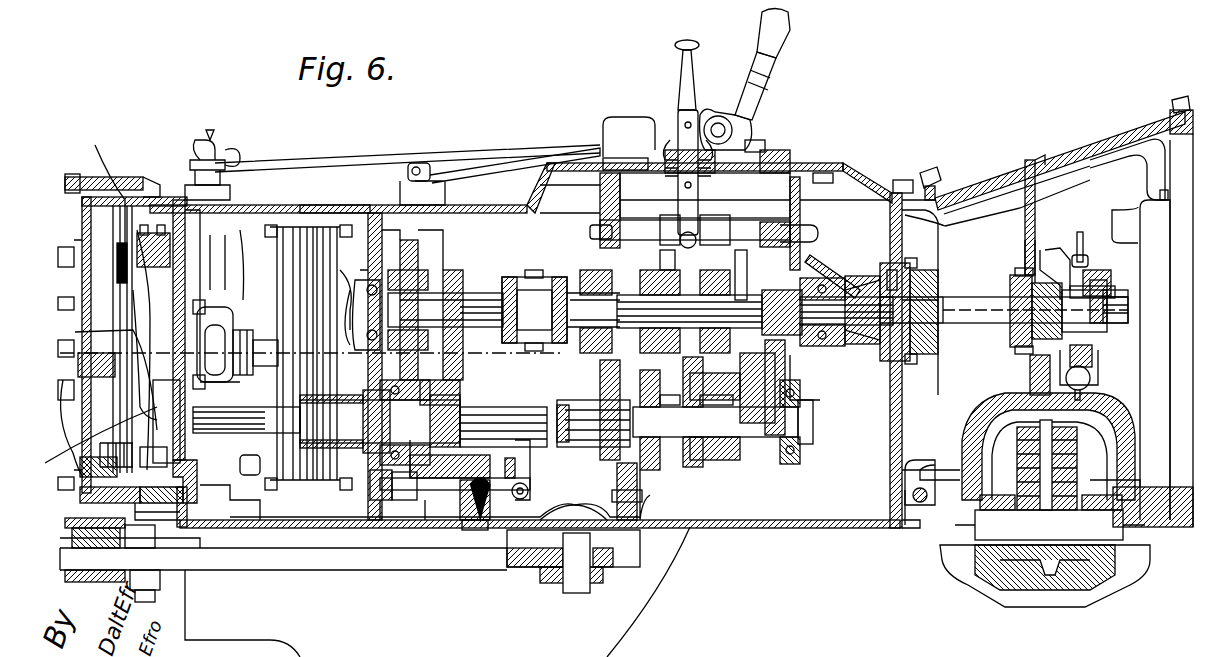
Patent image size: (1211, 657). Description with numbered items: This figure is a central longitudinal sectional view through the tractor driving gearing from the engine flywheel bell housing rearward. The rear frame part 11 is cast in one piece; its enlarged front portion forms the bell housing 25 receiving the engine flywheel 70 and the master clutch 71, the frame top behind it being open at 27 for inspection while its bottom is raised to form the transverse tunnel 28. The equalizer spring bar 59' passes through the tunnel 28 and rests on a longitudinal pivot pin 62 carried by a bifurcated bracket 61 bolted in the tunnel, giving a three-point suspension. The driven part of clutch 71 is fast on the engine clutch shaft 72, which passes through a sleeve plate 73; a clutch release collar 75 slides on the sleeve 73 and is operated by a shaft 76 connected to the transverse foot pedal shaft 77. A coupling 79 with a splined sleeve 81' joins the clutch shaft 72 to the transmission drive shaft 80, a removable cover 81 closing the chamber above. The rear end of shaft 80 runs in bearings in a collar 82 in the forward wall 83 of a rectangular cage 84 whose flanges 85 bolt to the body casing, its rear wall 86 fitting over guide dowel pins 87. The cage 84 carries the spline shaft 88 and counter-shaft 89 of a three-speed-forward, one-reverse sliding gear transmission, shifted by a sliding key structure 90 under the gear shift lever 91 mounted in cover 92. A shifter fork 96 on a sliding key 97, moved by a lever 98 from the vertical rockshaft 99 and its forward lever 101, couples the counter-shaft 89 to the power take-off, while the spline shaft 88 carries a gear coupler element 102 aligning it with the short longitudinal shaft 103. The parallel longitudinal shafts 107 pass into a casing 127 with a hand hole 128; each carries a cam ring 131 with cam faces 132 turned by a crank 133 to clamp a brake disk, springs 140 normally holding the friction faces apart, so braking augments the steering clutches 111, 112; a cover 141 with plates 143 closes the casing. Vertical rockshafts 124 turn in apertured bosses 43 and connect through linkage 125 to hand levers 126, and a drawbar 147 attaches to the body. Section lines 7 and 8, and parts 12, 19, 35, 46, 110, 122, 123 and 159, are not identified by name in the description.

The section line 7 is at (106, 362).
The section line 8 is at (397, 215).
The frame part 11 is at (810, 528).
The housing bottom wall 12 is at (445, 522).
The bell housing 19 is at (902, 404).
The bell housing 25 is at (1172, 118).
The inspection opening 27 is at (945, 206).
The transverse tunnel 28 is at (1000, 396).
The frame member 35 is at (658, 572).
The apertured bosses 43 is at (265, 415).
The gear 46 is at (365, 422).
The equalizer spring bar 59' is at (1012, 465).
The bracket 61 is at (995, 560).
The pivot pin 62 is at (985, 530).
The flywheel 70 is at (1185, 500).
The master clutch 71 is at (1152, 210).
The engine clutch shaft 72 is at (1105, 300).
The sleeve plate 73 is at (1057, 262).
The clutch release collar 75 is at (1090, 268).
The shaft 76 is at (1060, 368).
The foot pedal shaft 77 is at (898, 496).
The coupling 79 is at (975, 310).
The transmission drive shaft 80 is at (888, 338).
The removable cover 81 is at (997, 196).
The splined sleeve 81' is at (871, 294).
The collar 82 is at (822, 278).
The forward transverse wall 83 is at (818, 233).
The cage 84 is at (755, 185).
The flanges 85 is at (590, 172).
The rear wall 86 is at (590, 232).
The guide dowel pins 87 is at (640, 503).
The spline shaft 88 is at (694, 302).
The counter-shaft 89 is at (752, 425).
The sliding key structure 90 is at (738, 232).
The gear shift lever 91 is at (693, 72).
The cover 92 is at (635, 165).
The shifter fork 96 is at (530, 461).
The sliding key 97 is at (500, 485).
The lever 98 is at (370, 490).
The rockshaft 99 is at (435, 240).
The lever 101 is at (518, 160).
The gear coupler element 102 is at (516, 285).
The short longitudinal shaft 103 is at (487, 292).
The longitudinal shafts 107 is at (262, 345).
The clutch housing 110 is at (82, 211).
The steering clutch 111 is at (236, 382).
The steering clutch 112 is at (338, 212).
The bracket 122 is at (238, 327).
The link 123 is at (212, 300).
The rockshafts 124 is at (212, 265).
The linkage 125 is at (370, 160).
The hand lever 126 is at (778, 48).
The casing 127 is at (182, 205).
The hand hole 128 is at (220, 482).
The cam ring 131 is at (85, 460).
The cam faces 132 is at (85, 335).
The crank 133 is at (140, 210).
The springs 140 is at (82, 496).
The cover 141 is at (90, 180).
The plates 143 is at (78, 255).
The drawbar 147 is at (400, 565).
The lever 159 is at (101, 191).